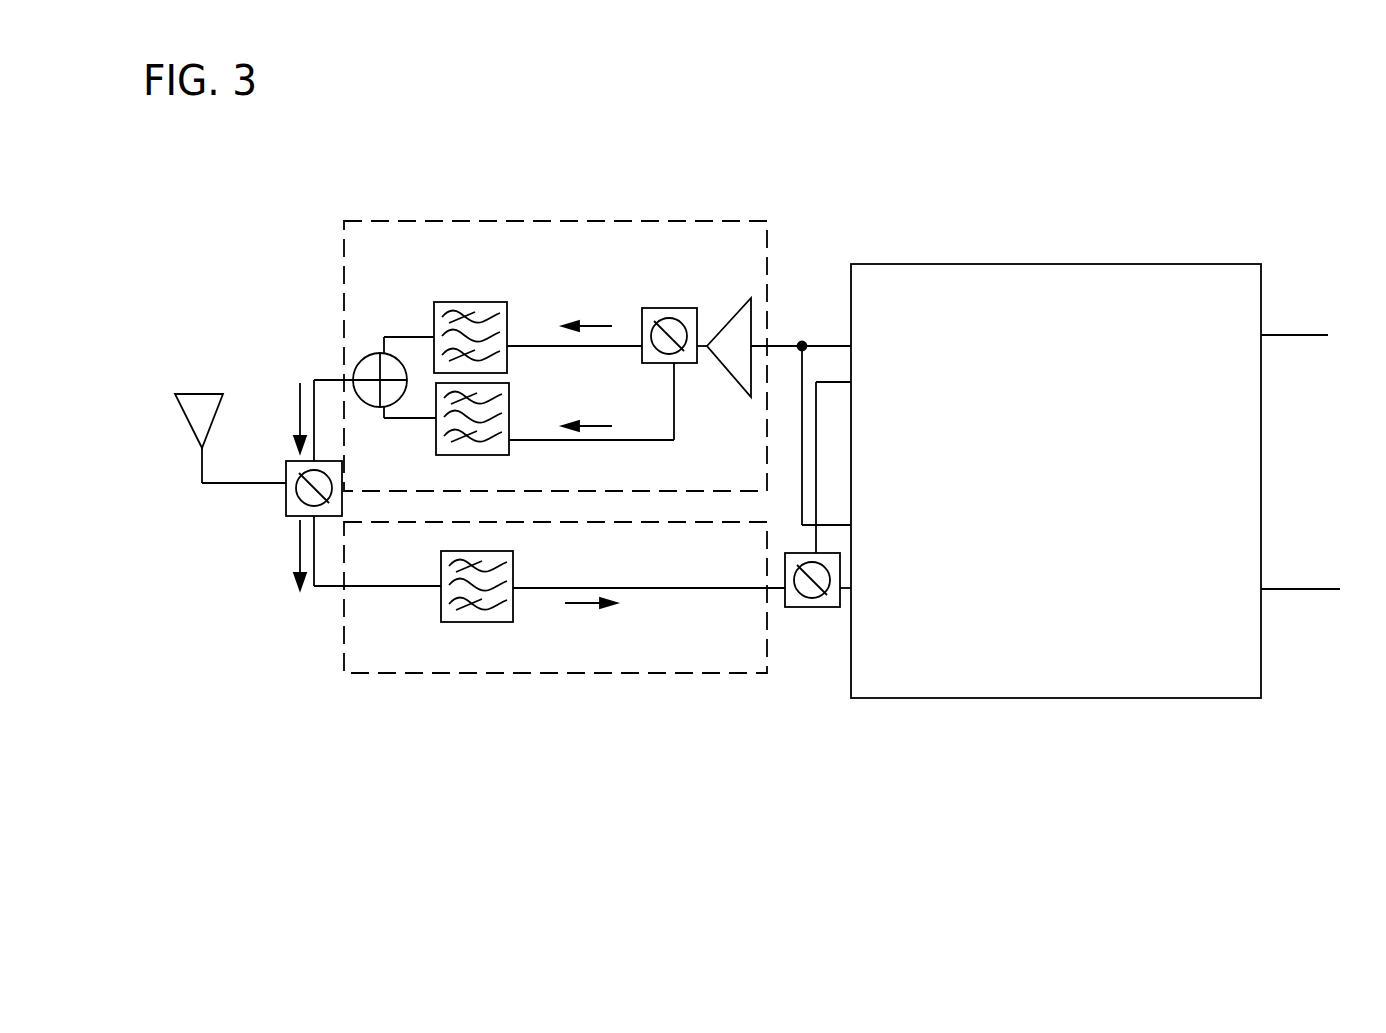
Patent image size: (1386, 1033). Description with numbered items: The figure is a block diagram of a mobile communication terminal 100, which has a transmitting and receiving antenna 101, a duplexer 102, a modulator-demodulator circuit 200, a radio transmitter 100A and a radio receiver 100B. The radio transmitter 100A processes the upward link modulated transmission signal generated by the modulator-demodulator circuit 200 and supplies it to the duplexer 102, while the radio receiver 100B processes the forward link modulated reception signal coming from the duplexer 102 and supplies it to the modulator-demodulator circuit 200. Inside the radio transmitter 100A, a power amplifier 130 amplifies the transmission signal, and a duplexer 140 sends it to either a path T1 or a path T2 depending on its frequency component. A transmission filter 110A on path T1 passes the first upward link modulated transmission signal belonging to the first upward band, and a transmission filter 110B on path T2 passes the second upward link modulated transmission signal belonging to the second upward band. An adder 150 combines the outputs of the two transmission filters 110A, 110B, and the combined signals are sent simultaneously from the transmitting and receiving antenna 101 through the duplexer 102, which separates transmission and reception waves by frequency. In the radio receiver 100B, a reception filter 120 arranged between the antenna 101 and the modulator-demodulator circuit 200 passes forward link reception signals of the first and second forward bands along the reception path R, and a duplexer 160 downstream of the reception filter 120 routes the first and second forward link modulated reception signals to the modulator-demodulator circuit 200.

The mobile communication terminal 100 is at (1294, 135).
The radio transmitter 100A is at (657, 221).
The radio receiver 100B is at (645, 673).
The transmitting and receiving antenna 101 is at (182, 409).
The duplexer 102 is at (287, 510).
The transmission filter 110A is at (453, 302).
The transmission filter 110B is at (436, 433).
The reception filter 120 is at (441, 612).
The power amplifier 130 is at (735, 314).
The duplexer 140 is at (697, 363).
The adder 150 is at (364, 357).
The duplexer 160 is at (808, 607).
The modulator-demodulator circuit 200 is at (1262, 286).
The path T1 is at (530, 345).
The path T2 is at (538, 440).
The reception signal R is at (622, 590).